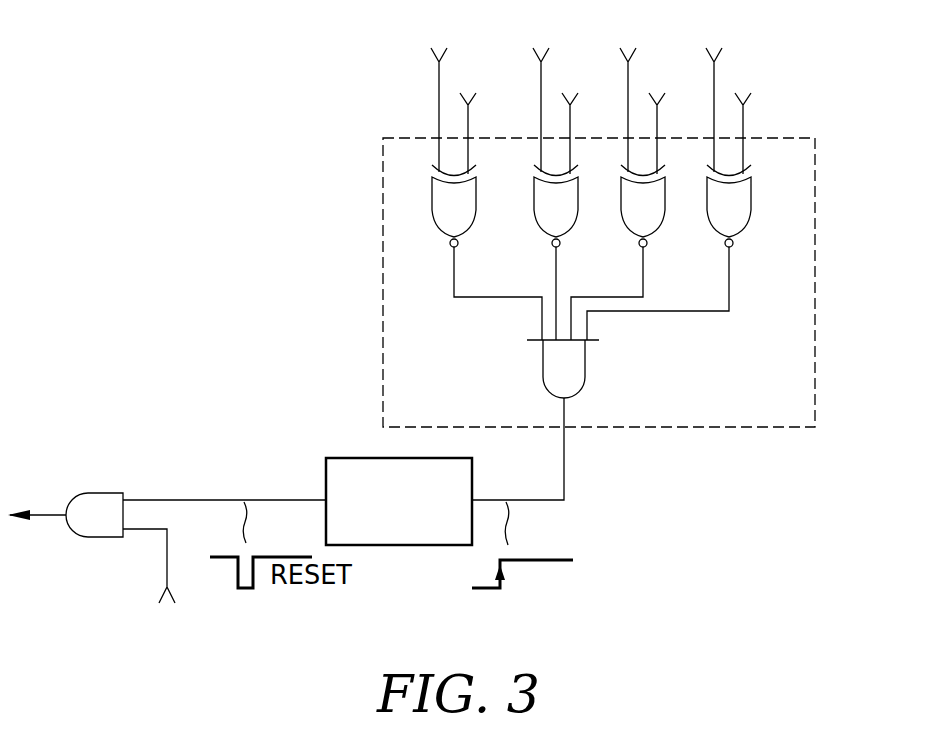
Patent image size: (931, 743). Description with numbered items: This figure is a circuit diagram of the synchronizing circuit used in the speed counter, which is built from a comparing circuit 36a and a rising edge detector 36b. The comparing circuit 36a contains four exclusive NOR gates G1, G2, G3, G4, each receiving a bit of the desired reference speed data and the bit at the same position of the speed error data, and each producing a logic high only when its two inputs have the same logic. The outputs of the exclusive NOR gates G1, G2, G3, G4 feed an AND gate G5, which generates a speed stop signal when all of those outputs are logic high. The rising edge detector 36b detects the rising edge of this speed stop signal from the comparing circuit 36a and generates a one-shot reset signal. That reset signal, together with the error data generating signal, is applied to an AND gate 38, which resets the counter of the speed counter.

The comparing circuit 36a is at (640, 224).
The rising edge detector 36b is at (398, 546).
The AND gate 38 is at (94, 493).
The exclusive NOR gate G1 is at (476, 200).
The exclusive NOR gate G2 is at (578, 200).
The exclusive NOR gate G3 is at (665, 200).
The exclusive NOR gate G4 is at (751, 200).
The AND gate G5 is at (585, 367).